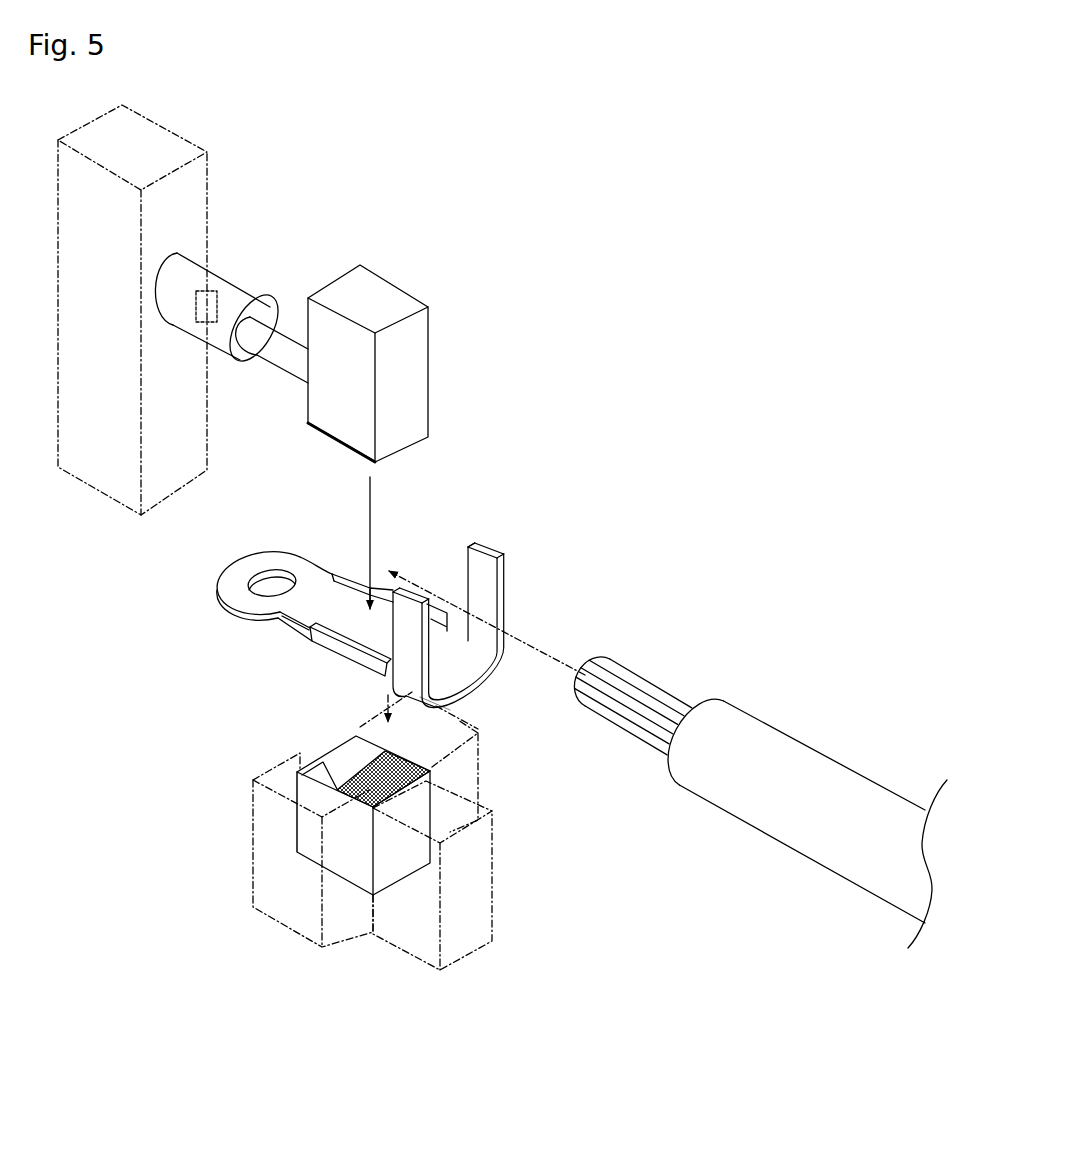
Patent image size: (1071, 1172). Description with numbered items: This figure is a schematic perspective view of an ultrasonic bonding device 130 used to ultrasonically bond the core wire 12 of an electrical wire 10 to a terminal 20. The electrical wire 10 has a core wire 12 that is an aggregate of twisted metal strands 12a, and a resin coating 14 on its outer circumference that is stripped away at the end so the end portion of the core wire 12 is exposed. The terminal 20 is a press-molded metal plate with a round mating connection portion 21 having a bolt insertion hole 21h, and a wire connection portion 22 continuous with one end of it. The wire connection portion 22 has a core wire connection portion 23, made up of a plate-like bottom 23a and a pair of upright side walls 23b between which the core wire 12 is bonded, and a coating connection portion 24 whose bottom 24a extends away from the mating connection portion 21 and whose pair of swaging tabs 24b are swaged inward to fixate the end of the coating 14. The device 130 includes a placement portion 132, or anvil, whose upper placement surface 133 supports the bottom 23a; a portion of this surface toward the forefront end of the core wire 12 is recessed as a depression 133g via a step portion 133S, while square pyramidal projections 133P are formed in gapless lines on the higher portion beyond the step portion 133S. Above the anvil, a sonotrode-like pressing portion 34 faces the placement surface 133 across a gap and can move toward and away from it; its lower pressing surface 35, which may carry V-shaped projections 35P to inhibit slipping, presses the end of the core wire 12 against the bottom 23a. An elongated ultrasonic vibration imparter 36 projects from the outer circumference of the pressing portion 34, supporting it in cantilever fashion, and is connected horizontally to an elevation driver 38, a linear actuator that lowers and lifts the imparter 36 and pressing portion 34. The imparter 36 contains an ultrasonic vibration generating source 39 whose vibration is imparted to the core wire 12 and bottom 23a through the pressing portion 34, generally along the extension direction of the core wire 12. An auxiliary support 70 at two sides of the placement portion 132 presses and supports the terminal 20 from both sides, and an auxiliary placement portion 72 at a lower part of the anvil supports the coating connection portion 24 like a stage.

The electrical wire 10 is at (856, 769).
The core wire 12 is at (683, 697).
The strands 12a is at (642, 690).
The coating 14 is at (797, 748).
The terminal 20 is at (312, 556).
The mating connection portion 21 is at (255, 553).
The bolt insertion hole 21h is at (248, 583).
The wire connection portion 22 is at (497, 680).
The core wire connection portion 23 is at (316, 648).
The bottom 23a is at (282, 625).
The side walls 23b is at (350, 663).
The coating connection portion 24 is at (504, 612).
The bottom 24a is at (458, 692).
The swaging tabs 24b is at (492, 552).
The pressing portion 34 is at (430, 350).
The pressing surface 35 is at (373, 463).
The projections 35P is at (327, 434).
The ultrasonic vibration imparter 36 is at (253, 298).
The elevation driver 38 is at (209, 152).
The ultrasonic vibration generating source 39 is at (209, 288).
The auxiliary support 70 is at (482, 759).
The auxiliary placement portion 72 is at (495, 918).
The ultrasonic bonding device 130 is at (416, 199).
The placement portion 132 is at (397, 887).
The placement surface 133 is at (296, 755).
The depression 133g is at (343, 752).
The projections 133P is at (433, 786).
The step portion 133S is at (333, 797).